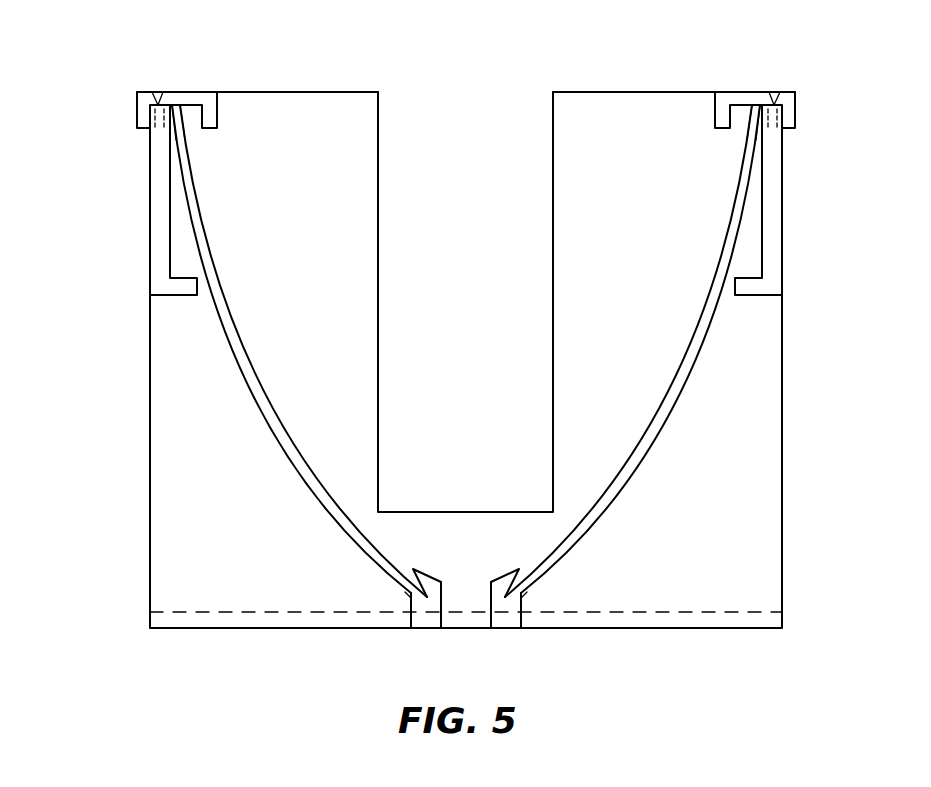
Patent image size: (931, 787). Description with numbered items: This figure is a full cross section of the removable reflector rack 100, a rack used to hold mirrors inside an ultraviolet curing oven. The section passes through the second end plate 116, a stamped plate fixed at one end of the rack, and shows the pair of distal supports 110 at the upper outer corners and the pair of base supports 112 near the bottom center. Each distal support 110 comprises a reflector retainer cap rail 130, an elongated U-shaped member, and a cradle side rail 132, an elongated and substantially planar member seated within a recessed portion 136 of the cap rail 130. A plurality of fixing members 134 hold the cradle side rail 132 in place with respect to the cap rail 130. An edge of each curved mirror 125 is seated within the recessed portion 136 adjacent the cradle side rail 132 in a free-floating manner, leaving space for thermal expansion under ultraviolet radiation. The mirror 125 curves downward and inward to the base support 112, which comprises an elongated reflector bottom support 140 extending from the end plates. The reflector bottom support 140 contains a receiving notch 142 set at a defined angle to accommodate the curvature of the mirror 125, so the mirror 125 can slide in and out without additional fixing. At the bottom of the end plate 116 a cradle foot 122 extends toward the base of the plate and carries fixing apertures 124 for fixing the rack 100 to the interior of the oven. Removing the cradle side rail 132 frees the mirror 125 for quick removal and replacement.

The removable reflector rack 100 is at (338, 58).
The distal support 110 is at (128, 135).
The base support 112 is at (404, 600).
The second end plate 116 is at (646, 307).
The cradle foot 122 is at (786, 625).
The fixing aperture 124 is at (237, 614).
The mirror 125 is at (297, 472).
The reflector retainer cap rail 130 is at (140, 112).
The cradle side rail 132 is at (162, 230).
The fixing member 134 is at (157, 102).
The recessed portion 136 is at (192, 105).
The reflector bottom support 140 is at (425, 615).
The receiving notch 142 is at (418, 570).